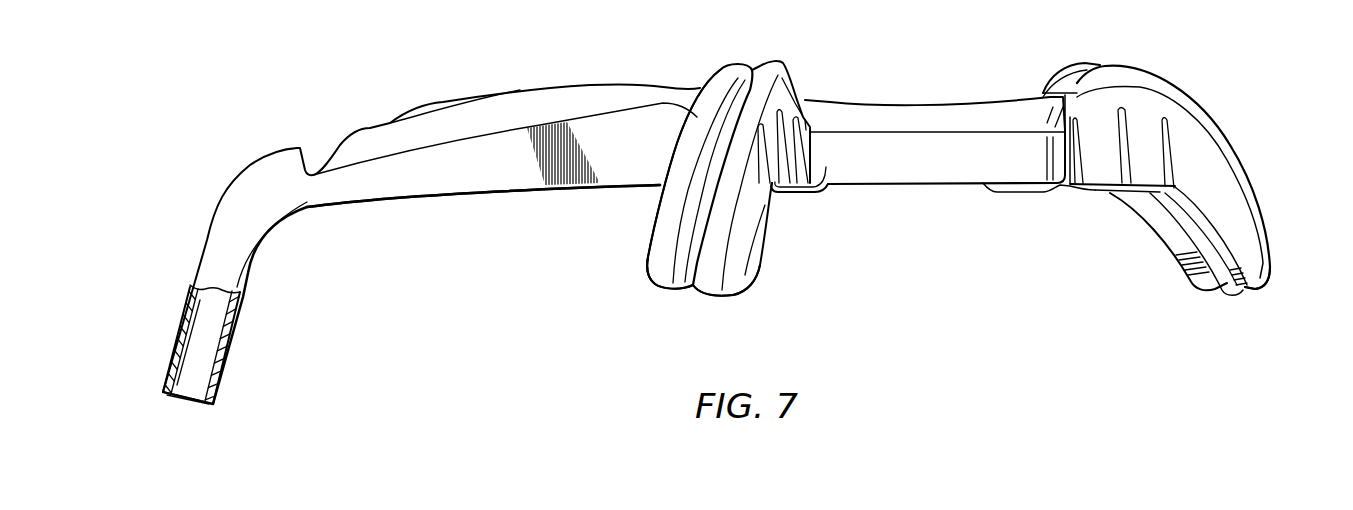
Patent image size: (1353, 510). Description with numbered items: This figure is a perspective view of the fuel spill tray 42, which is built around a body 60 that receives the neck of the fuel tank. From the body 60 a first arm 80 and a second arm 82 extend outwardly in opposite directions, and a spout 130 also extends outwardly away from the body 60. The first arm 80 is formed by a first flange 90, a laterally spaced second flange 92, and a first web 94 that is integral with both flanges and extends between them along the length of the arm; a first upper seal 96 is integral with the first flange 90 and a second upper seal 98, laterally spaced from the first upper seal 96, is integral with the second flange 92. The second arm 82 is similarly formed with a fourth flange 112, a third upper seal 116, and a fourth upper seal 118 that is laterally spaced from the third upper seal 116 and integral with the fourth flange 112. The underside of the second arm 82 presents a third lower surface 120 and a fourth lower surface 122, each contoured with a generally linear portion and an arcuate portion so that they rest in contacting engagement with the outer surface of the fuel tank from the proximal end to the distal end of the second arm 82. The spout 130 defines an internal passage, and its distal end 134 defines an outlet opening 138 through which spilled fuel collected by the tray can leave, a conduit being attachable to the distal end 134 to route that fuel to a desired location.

The fuel spill tray 42 is at (586, 61).
The body 60 is at (912, 195).
The first arm 80 is at (716, 179).
The second arm 82 is at (1182, 175).
The first flange 90 is at (718, 250).
The second flange 92 is at (658, 294).
The first web 94 is at (692, 216).
The first upper seal 96 is at (783, 63).
The second upper seal 98 is at (737, 65).
The fourth flange 112 is at (1267, 287).
The third upper seal 116 is at (1075, 63).
The fourth upper seal 118 is at (1220, 140).
The third lower surface 120 is at (1177, 243).
The fourth lower surface 122 is at (1220, 258).
The spout 130 is at (509, 198).
The distal end 134 is at (233, 345).
The outlet opening 138 is at (184, 410).